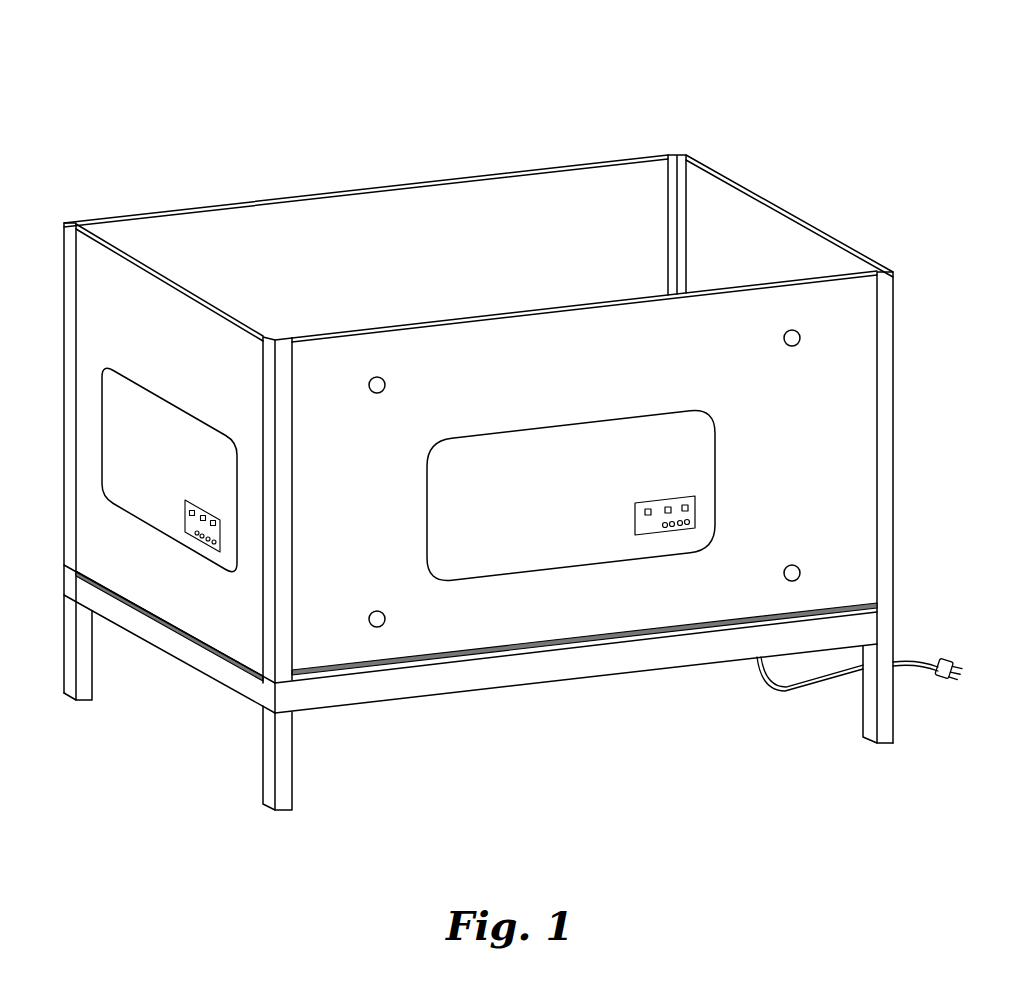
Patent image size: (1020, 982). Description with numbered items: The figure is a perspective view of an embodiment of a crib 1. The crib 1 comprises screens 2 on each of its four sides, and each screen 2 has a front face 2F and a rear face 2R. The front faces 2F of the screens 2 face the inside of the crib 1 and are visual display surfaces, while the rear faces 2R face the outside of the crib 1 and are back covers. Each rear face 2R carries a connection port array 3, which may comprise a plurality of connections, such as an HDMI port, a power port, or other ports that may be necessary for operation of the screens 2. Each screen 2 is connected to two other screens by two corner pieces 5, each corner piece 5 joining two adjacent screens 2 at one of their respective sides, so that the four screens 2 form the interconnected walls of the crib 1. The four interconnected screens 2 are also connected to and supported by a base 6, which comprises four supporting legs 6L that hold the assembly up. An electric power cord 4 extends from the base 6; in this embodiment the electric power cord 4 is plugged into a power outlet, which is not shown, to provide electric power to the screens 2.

The crib 1 is at (73, 153).
The screen 2 is at (391, 185).
The front face 2F is at (590, 200).
The rear face 2R is at (844, 307).
The connection port array 3 is at (690, 500).
The electric power cord 4 is at (798, 692).
The corner piece 5 is at (293, 602).
The base 6 is at (543, 682).
The supporting leg 6L is at (282, 812).